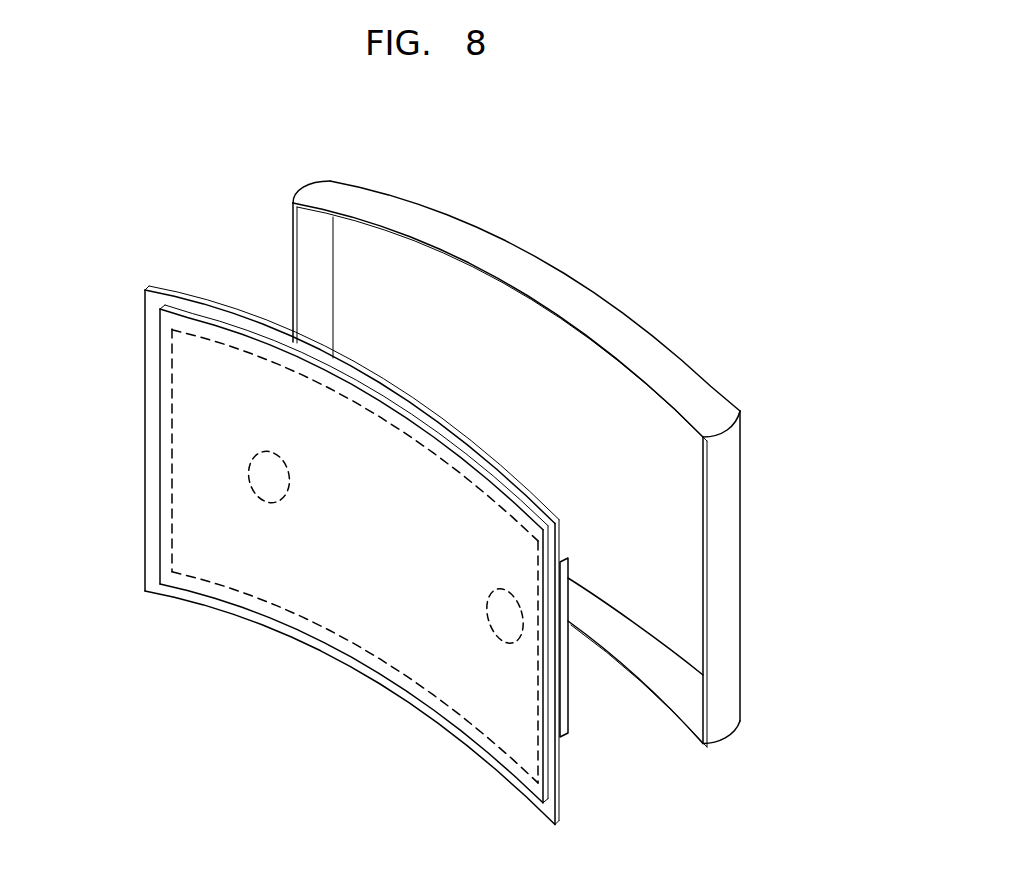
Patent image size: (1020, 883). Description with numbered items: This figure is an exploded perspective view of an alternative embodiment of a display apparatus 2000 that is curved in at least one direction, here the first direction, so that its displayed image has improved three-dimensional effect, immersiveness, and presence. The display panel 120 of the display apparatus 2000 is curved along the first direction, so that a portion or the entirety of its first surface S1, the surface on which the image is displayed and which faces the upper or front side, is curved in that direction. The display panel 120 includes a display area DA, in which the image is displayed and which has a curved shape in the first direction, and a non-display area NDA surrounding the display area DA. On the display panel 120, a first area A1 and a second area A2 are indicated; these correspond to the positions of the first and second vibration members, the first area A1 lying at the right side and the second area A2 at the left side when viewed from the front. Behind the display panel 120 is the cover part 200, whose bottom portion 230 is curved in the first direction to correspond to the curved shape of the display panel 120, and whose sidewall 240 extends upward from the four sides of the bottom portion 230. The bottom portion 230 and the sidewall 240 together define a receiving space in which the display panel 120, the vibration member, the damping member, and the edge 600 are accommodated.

The display apparatus 2000 is at (456, 464).
The cover part 200 is at (440, 439).
The sidewall 240 is at (312, 212).
The bottom portion 230 is at (357, 240).
The edge 600 is at (150, 377).
The display panel 120 is at (165, 439).
The first surface S1 is at (233, 373).
The first area A1 is at (250, 472).
The second area A2 is at (489, 619).
The display area DA is at (310, 599).
The non-display area NDA is at (351, 641).